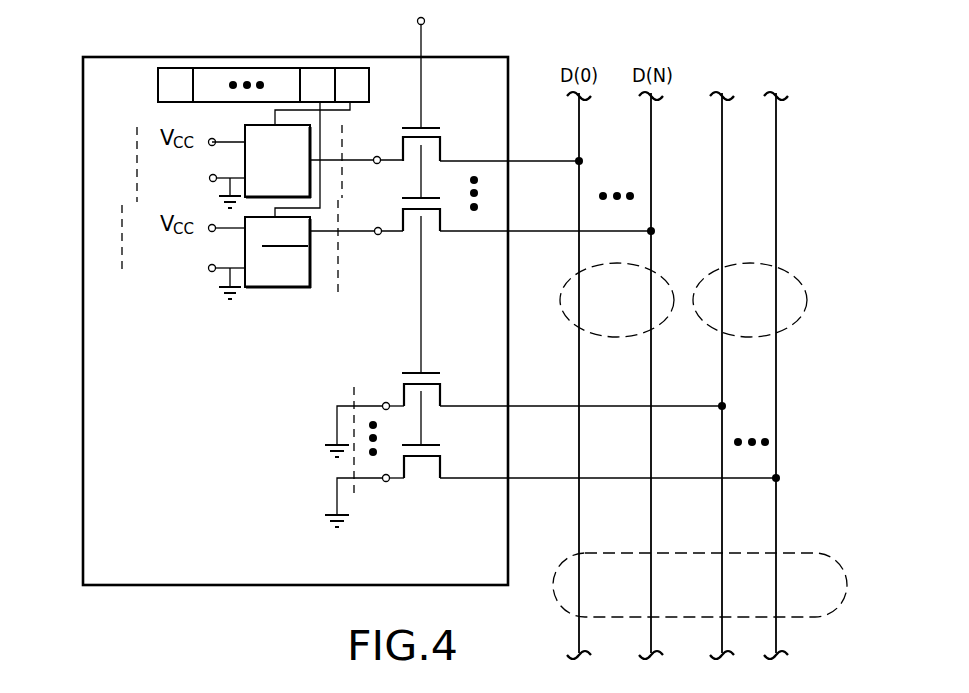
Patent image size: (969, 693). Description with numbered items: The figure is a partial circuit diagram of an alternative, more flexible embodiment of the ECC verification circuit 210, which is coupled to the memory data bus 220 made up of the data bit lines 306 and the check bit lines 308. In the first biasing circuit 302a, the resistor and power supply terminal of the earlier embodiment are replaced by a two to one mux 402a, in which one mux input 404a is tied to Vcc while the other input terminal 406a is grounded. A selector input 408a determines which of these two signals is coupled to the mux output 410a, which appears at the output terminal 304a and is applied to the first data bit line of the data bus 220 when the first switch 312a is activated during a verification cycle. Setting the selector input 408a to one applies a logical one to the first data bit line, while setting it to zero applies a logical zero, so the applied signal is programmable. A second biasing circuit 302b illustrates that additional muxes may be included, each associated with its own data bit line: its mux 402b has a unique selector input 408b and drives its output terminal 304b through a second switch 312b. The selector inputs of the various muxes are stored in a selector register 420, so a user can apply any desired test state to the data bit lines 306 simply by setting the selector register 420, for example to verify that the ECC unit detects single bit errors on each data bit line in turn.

The ECC verification circuit 210 is at (163, 548).
The memory data bus 220 is at (840, 560).
The first biasing circuit 302a is at (153, 162).
The second biasing circuit 302b is at (170, 247).
The output terminal 304a is at (378, 164).
The output terminal 304b is at (378, 235).
The data bit lines 306 is at (658, 277).
The check bit lines 308 is at (793, 277).
The first switch 312a is at (447, 126).
The second switch 312b is at (437, 241).
The 2 to 1 mux 402a is at (308, 154).
The 2 to 1 mux 402b is at (258, 288).
The mux input 404a is at (228, 142).
The input terminal 406a is at (210, 170).
The selector input 408a is at (339, 117).
The selector input 408b is at (321, 198).
The mux output 410a is at (323, 160).
The selector register 420 is at (158, 87).